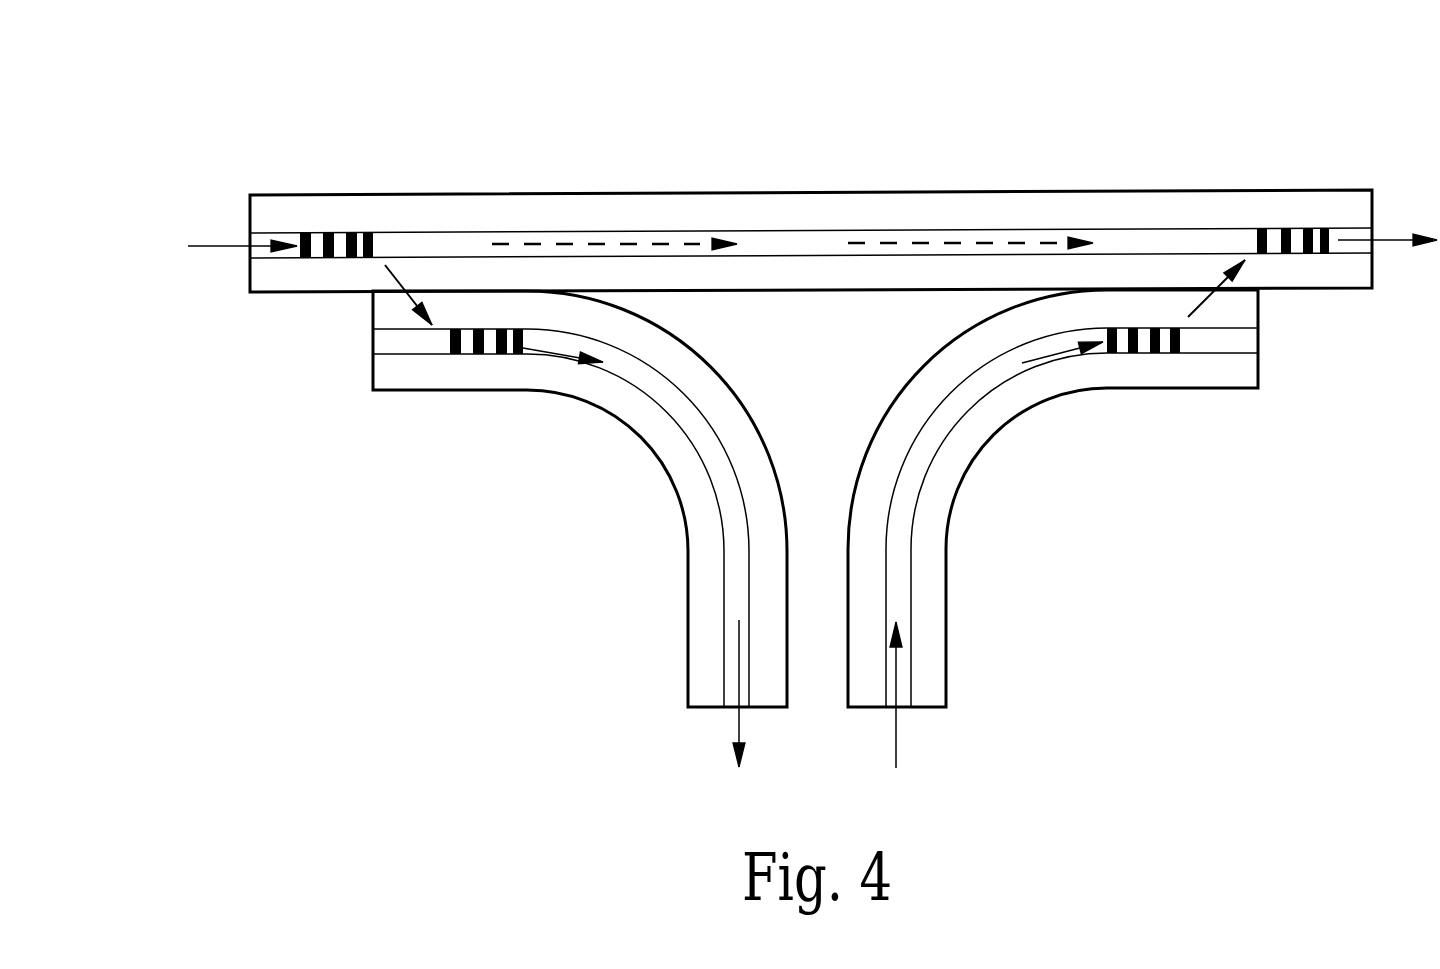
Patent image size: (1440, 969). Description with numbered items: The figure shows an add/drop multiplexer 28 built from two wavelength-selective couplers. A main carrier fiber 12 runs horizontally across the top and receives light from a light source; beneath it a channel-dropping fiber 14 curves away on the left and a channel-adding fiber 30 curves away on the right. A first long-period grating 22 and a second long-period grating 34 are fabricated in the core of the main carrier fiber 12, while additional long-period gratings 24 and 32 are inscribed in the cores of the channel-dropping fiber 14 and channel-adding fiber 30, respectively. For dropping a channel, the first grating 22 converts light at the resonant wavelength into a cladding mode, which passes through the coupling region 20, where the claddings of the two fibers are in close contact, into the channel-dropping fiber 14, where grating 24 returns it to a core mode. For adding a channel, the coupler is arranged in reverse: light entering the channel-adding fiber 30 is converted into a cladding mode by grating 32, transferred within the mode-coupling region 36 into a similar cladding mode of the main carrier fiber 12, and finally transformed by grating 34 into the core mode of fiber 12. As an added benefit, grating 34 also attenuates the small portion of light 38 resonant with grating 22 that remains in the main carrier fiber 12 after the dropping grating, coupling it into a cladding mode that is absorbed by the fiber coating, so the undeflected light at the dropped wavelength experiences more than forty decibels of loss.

The add/drop multiplexer 28 is at (222, 52).
The main carrier fiber 12 is at (740, 191).
The first long-period grating 22 is at (337, 237).
The small portion of light 38 is at (890, 240).
The second long-period grating 34 is at (1272, 235).
The channel-dropping fiber 14 is at (622, 435).
The long-period grating 24 is at (488, 342).
The coupling region 20 is at (395, 298).
The channel-adding fiber 30 is at (1003, 437).
The long-period grating 32 is at (1122, 342).
The mode-coupling region 36 is at (1228, 293).